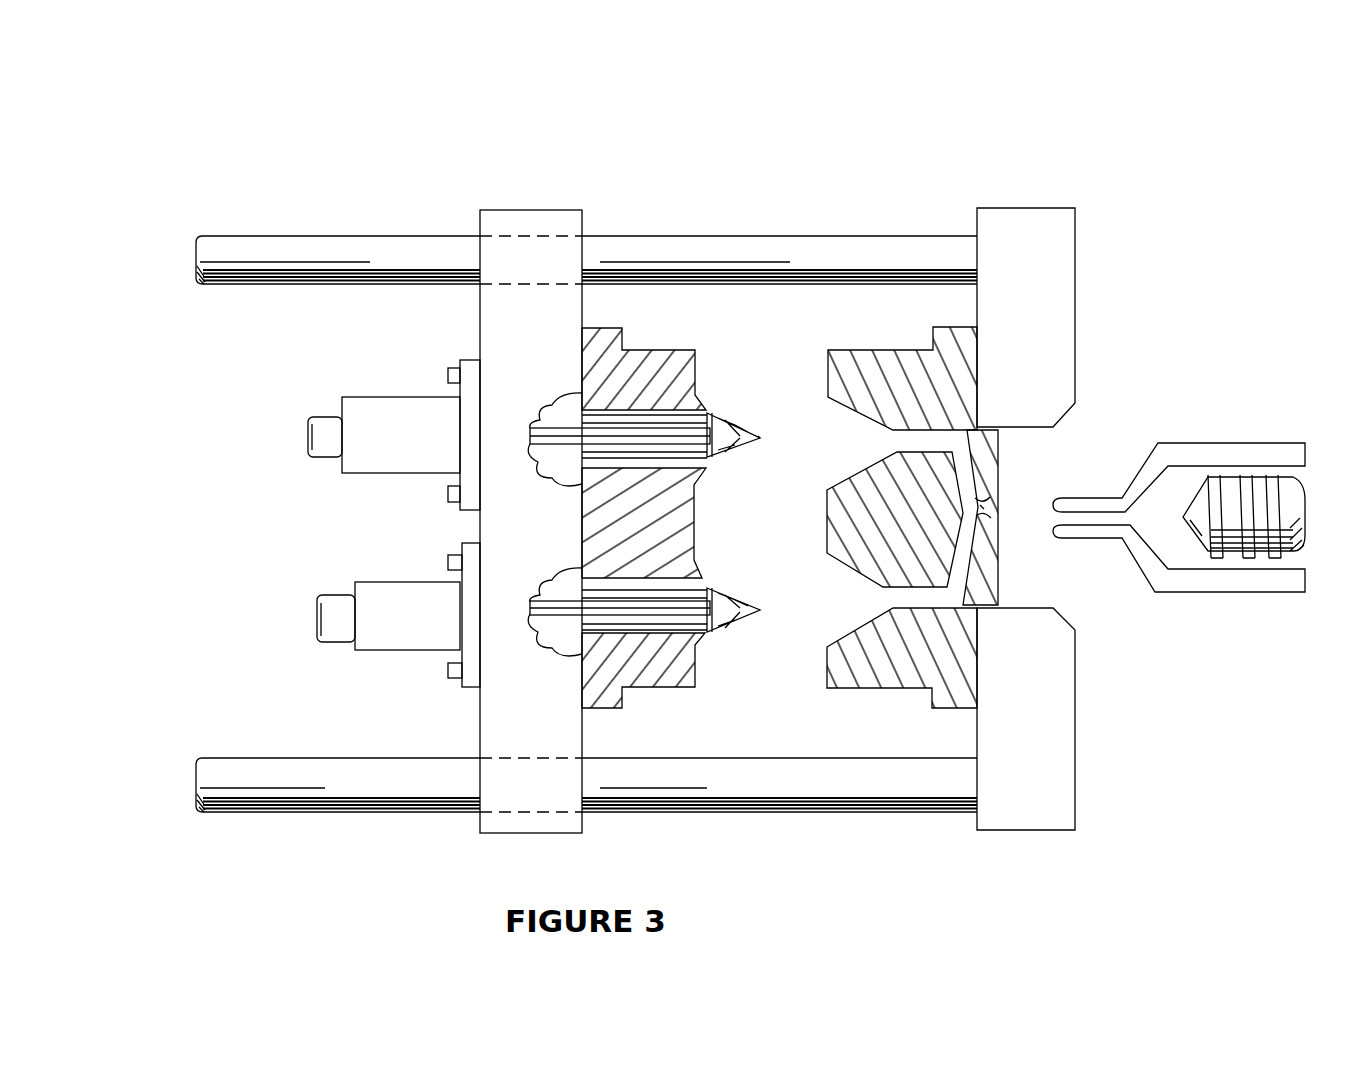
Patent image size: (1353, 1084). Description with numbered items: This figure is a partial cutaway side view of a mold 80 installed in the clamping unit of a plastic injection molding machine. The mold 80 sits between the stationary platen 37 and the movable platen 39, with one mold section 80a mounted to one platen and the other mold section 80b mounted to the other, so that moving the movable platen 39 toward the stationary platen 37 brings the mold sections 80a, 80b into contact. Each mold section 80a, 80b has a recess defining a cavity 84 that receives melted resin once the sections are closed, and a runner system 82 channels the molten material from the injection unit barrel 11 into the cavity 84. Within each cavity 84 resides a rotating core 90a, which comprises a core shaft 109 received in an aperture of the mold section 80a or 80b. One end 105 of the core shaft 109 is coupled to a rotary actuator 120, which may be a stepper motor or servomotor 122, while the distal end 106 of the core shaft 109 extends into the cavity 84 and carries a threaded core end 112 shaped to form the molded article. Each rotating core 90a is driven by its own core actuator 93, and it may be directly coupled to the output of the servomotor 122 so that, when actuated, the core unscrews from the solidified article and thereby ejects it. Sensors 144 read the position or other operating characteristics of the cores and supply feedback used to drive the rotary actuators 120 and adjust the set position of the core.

The injection unit barrel 11 is at (1188, 450).
The stationary platen 37 is at (513, 258).
The movable platen 39 is at (1042, 227).
The mold 80 is at (775, 192).
The mold section 80a is at (643, 347).
The mold section 80b is at (893, 360).
The runner system 82 is at (963, 500).
The cavity 84 is at (855, 433).
The rotating core 90a is at (722, 412).
The core actuator 93 is at (385, 415).
The end of core shaft 105 is at (540, 383).
The distal end of core shaft 106 is at (717, 371).
The core shaft 109 is at (677, 438).
The threaded core end 112 is at (760, 615).
The rotary actuator 120 is at (363, 423).
The servomotor 122 is at (313, 433).
The sensor 144 is at (317, 445).